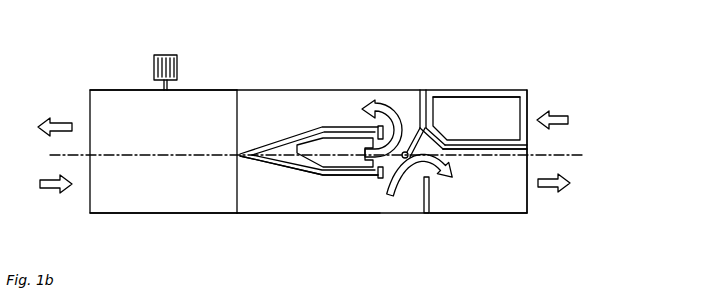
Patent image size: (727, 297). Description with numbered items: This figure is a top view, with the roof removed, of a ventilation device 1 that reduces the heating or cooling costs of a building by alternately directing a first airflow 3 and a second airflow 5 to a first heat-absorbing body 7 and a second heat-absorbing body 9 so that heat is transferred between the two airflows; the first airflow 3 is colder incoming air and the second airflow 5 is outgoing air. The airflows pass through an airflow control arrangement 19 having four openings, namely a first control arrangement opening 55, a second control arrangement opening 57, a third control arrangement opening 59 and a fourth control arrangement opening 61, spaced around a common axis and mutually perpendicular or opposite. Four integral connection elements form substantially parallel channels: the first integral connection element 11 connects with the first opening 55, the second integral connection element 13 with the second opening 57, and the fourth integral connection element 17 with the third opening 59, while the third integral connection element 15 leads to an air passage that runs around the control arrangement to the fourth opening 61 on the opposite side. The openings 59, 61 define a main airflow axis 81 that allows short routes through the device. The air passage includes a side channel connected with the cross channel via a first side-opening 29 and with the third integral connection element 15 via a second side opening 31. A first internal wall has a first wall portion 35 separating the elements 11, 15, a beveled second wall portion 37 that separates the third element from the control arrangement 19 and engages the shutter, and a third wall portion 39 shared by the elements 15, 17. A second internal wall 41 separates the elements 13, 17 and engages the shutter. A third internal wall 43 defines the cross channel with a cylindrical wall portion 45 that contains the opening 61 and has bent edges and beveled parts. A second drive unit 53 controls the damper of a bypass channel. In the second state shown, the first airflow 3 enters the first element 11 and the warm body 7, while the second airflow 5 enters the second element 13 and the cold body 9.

The ventilation device 1 is at (330, 100).
The first airflow 3 is at (58, 117).
The second airflow 5 is at (53, 187).
The first heat-absorbing body 7 is at (127, 107).
The second heat-absorbing body 9 is at (170, 183).
The first integral connection element 11 is at (252, 105).
The second integral connection element 13 is at (258, 197).
The third integral connection element 15 is at (525, 112).
The fourth integral connection element 17 is at (505, 193).
The airflow control arrangement 19 is at (418, 90).
The first side-opening 29 is at (337, 143).
The second side opening 31 is at (490, 113).
The first wall portion 35 is at (448, 98).
The second wall portion 37 is at (437, 128).
The third wall portion 39 is at (527, 147).
The second internal wall 41 is at (430, 196).
The third internal wall 43 is at (337, 177).
The wall portion 45 is at (273, 157).
The second drive unit 53 is at (162, 55).
The first control arrangement opening 55 is at (413, 128).
The second control arrangement opening 57 is at (420, 173).
The third control arrangement opening 59 is at (463, 153).
The fourth control arrangement opening 61 is at (370, 165).
The main airflow axis 81 is at (580, 157).